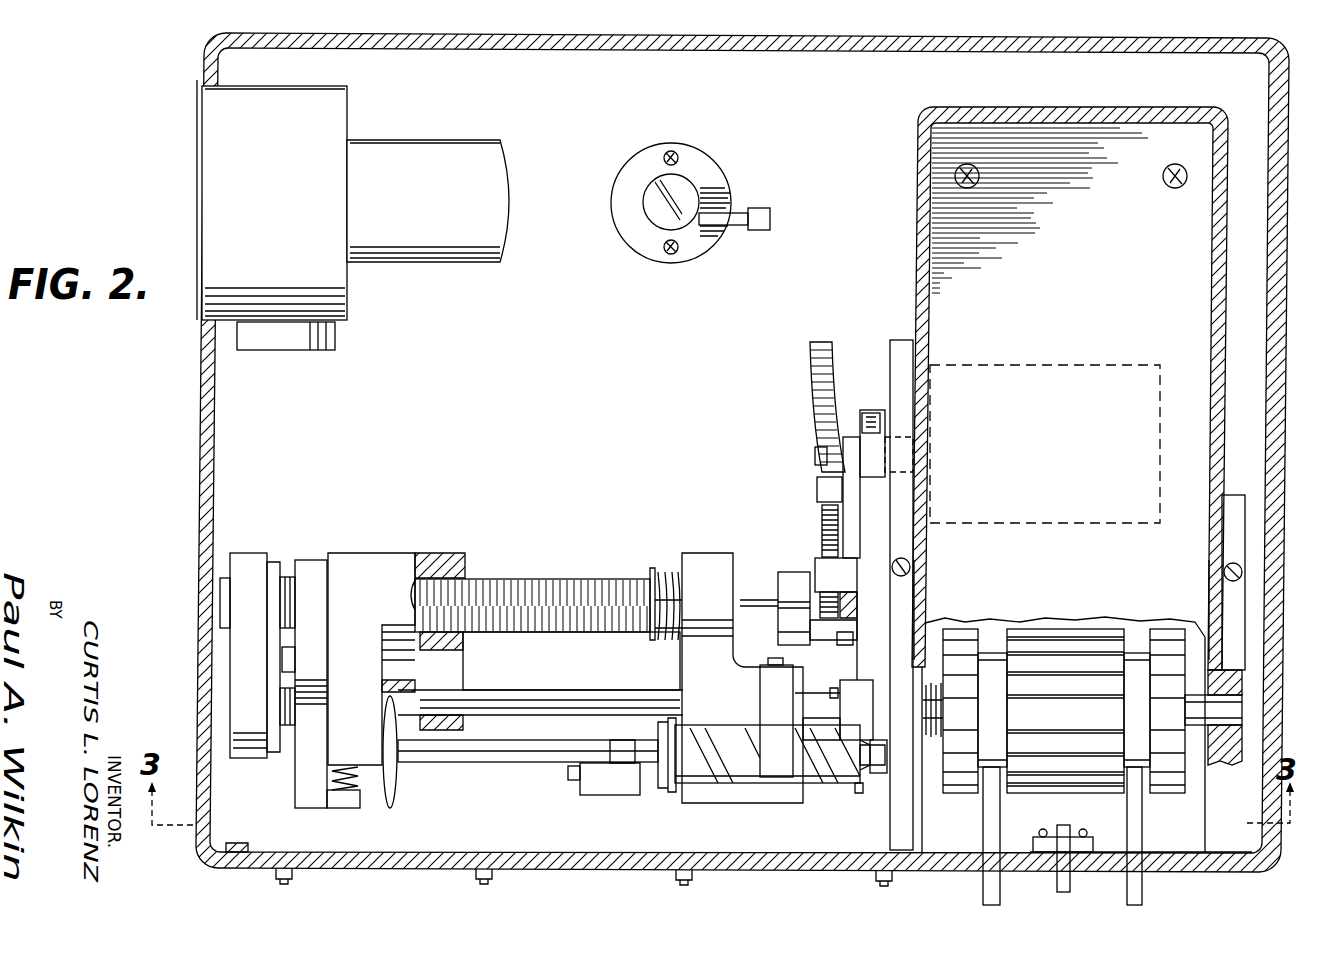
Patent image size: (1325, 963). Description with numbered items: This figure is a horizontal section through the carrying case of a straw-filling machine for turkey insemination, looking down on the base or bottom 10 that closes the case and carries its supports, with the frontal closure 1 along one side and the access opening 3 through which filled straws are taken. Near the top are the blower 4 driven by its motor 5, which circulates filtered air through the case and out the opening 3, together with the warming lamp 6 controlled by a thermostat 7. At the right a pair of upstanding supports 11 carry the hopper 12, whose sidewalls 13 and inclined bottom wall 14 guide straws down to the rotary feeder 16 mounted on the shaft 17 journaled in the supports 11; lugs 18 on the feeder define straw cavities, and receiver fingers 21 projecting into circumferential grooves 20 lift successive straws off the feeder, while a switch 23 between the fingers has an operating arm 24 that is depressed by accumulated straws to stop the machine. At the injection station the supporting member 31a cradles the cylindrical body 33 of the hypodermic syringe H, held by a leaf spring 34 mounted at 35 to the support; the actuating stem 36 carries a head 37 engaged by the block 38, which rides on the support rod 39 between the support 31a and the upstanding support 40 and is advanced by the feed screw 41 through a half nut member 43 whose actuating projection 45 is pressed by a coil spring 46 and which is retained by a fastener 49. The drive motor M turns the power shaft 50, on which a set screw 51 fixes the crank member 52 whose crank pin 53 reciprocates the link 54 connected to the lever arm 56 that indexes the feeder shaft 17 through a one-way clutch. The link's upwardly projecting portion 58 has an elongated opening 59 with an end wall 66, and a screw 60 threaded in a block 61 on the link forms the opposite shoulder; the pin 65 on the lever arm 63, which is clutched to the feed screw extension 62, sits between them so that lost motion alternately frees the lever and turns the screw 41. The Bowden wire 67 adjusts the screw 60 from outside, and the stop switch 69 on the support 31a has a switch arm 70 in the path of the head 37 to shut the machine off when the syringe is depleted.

The frontal closure 1 is at (447, 862).
The opening 3 is at (1207, 862).
The blower 4 is at (272, 215).
The motor 5 is at (428, 201).
The lamp 6 is at (688, 192).
The thermostat 7 is at (762, 216).
The base or bottom 10 is at (559, 384).
The upstanding brackets or supports 11 is at (1225, 817).
The hopper 12 is at (915, 288).
The sidewalls 13 is at (1236, 298).
The inclined base or bottom wall 14 is at (1059, 212).
The rotary feeder 16 is at (1124, 742).
The shaft 17 is at (1220, 710).
The lugs 18 is at (1092, 628).
The circumferential grooves 20 is at (1138, 653).
The receiver fingers 21 is at (1135, 813).
The switch 23 is at (1085, 853).
The operating arm 24 is at (1060, 878).
The supporting member 31a is at (742, 678).
The cylindrical body 33 is at (840, 775).
The leaf spring 34 is at (782, 762).
The mounting 35 is at (776, 665).
The actuating stem 36 is at (530, 758).
The head 37 is at (400, 797).
The block 38 is at (372, 568).
The support rod 39 is at (513, 700).
The upstanding support 40 is at (250, 565).
The feed screw 41 is at (527, 590).
The half nut member 43 is at (306, 797).
The actuating projection 45 is at (352, 806).
The coil spring 46 is at (330, 780).
The retaining fastener 49 is at (282, 658).
The power shaft 50 is at (905, 418).
The set screw 51 is at (873, 413).
The crank member 52 is at (875, 470).
The crank pin 53 is at (815, 457).
The link or pitman 54 is at (850, 538).
The lever arm 56 is at (856, 697).
The upwardly projecting portion 58 is at (848, 568).
The elongated opening 59 is at (855, 625).
The screw 60 is at (822, 515).
The block 61 is at (817, 490).
The extension 62 is at (757, 603).
The lever arm 63 is at (790, 577).
The pin 65 is at (845, 637).
The end wall 66 is at (838, 620).
The Bowden wire 67 is at (818, 385).
The stop switch 69 is at (600, 795).
The switch arm 70 is at (570, 782).
The hypodermic syringe H is at (703, 793).
The drive motor M is at (1068, 364).